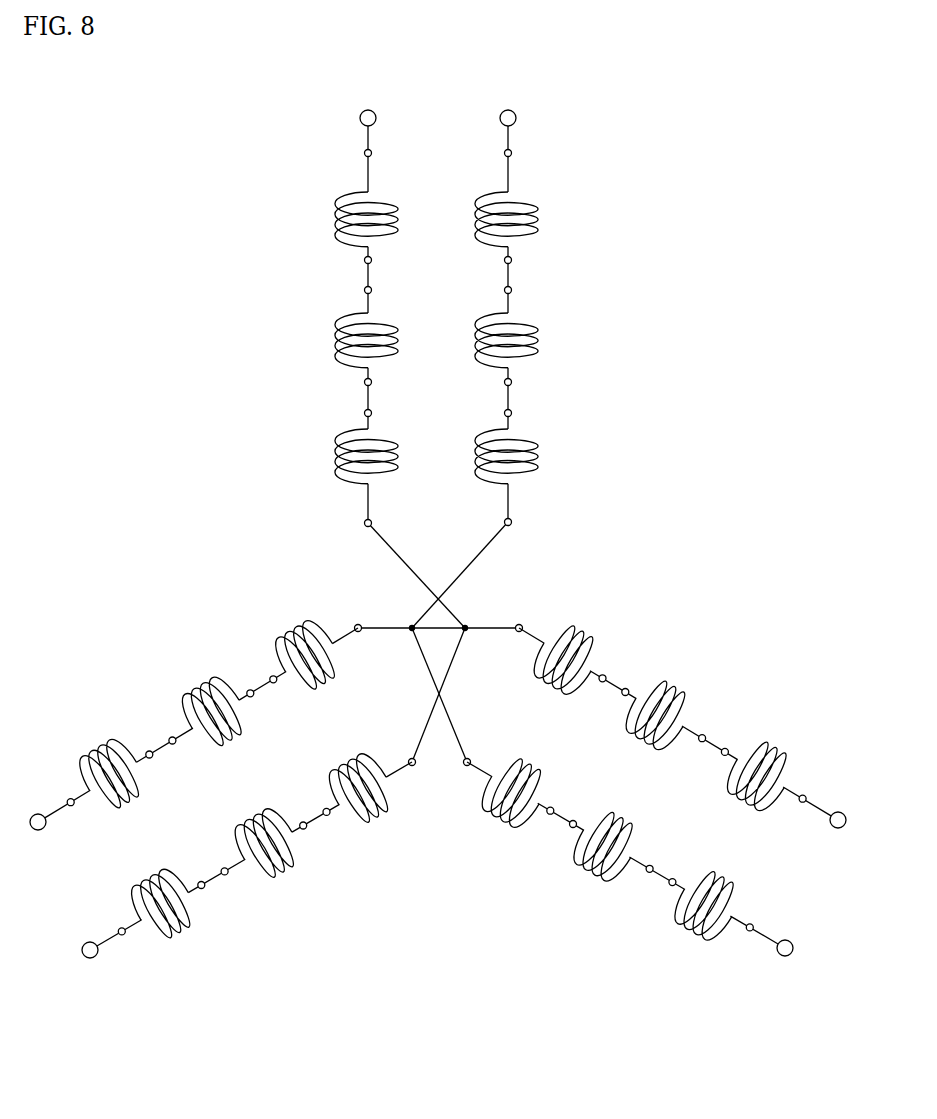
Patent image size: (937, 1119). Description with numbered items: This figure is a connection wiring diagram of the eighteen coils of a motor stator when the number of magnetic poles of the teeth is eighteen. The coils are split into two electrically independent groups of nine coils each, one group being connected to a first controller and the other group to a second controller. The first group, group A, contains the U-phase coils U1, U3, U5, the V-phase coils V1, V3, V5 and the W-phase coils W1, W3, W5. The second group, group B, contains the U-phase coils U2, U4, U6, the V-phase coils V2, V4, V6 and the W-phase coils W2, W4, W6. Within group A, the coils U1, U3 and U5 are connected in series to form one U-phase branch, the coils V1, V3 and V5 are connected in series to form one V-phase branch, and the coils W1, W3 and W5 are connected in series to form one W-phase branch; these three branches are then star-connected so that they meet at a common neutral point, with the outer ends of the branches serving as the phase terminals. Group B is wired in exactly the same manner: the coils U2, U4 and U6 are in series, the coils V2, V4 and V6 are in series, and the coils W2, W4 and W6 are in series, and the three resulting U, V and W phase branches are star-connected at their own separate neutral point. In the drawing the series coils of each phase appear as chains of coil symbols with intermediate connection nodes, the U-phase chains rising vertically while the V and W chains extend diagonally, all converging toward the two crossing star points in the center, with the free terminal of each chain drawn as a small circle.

The U-phase coil U1 is at (346, 456).
The U-phase coil U2 is at (524, 340).
The U-phase coil U3 is at (346, 219).
The U-phase coil U4 is at (524, 456).
The U-phase coil U5 is at (346, 340).
The U-phase coil U6 is at (524, 219).
The V-phase coil V1 is at (511, 801).
The V-phase coil V2 is at (660, 697).
The V-phase coil V3 is at (706, 913).
The V-phase coil V4 is at (567, 642).
The V-phase coil V5 is at (604, 854).
The V-phase coil V6 is at (761, 757).
The W-phase coil W1 is at (363, 800).
The W-phase coil W2 is at (214, 699).
The W-phase coil W3 is at (167, 915).
The W-phase coil W4 is at (307, 642).
The W-phase coil W5 is at (271, 855).
The W-phase coil W6 is at (113, 760).